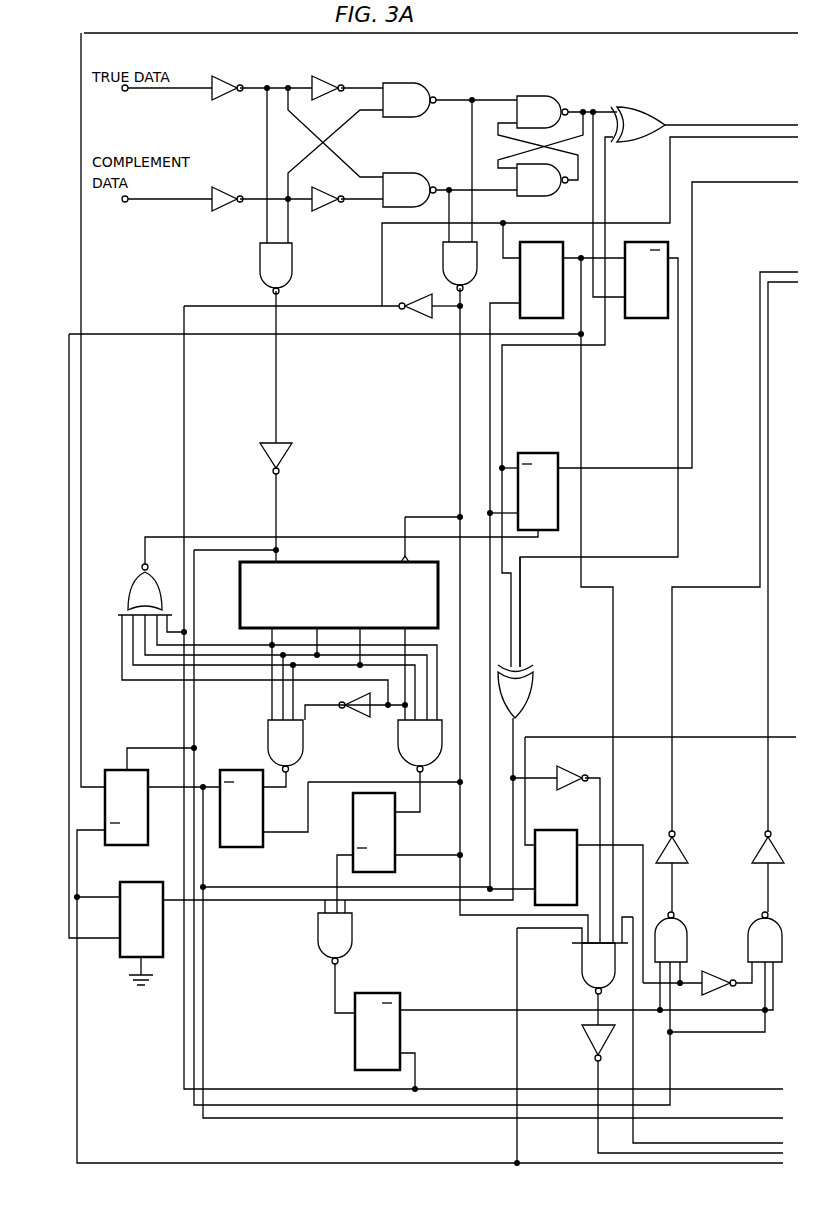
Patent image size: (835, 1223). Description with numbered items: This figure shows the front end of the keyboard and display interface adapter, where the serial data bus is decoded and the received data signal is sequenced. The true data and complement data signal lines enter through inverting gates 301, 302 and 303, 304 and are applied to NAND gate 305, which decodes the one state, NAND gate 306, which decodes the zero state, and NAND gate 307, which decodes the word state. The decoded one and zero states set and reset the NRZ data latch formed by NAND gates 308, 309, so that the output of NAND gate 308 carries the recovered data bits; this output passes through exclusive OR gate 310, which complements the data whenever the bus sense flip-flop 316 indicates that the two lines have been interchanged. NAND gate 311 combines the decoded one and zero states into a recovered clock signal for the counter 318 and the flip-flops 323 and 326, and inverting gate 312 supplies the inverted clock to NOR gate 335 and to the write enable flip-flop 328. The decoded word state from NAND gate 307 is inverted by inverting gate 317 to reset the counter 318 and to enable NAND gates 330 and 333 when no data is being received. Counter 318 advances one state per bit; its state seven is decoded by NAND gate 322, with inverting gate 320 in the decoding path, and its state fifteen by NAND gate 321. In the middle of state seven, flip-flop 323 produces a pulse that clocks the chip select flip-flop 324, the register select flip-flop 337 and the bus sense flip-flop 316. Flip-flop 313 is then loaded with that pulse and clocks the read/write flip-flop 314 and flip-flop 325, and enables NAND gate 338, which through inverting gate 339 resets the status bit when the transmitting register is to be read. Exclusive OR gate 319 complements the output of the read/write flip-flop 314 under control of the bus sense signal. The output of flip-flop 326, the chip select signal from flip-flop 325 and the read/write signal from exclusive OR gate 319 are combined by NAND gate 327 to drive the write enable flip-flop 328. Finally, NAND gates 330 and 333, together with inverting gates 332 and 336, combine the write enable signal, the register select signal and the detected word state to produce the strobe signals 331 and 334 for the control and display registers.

The inverting gate 301 is at (228, 80).
The inverting gate 302 is at (328, 80).
The inverting gate 303 is at (229, 191).
The inverting gate 304 is at (325, 208).
The NAND gate 305 is at (400, 83).
The NAND gate 306 is at (400, 173).
The NAND gate 307 is at (292, 270).
The NAND gate 308 is at (548, 97).
The NAND gate 309 is at (535, 197).
The exclusive OR gate 310 is at (648, 108).
The NAND gate 311 is at (443, 262).
The inverting gate 312 is at (405, 314).
The flip-flop 313 is at (520, 296).
The read/write flip-flop 314 is at (646, 318).
The bus sense flip-flop 316 is at (536, 453).
The inverting gate 317 is at (284, 457).
The counter 318 is at (240, 592).
The exclusive OR gate 319 is at (536, 684).
The inverting gate 320 is at (357, 716).
The NAND gate 321 is at (400, 754).
The NAND gate 322 is at (268, 737).
The flip-flop 323 is at (242, 847).
The chip select flip-flop 324 is at (128, 845).
The flip-flop 325 is at (124, 958).
The flip-flop 326 is at (395, 836).
The NAND gate 327 is at (352, 934).
The write enable flip-flop 328 is at (386, 993).
The NAND gate 330 is at (686, 928).
The strobe signal 331 is at (675, 846).
The inverting gate 332 is at (716, 968).
The NAND gate 333 is at (748, 938).
The strobe signal 334 is at (754, 862).
The NOR gate 335 is at (136, 576).
The inverting gate 336 is at (568, 766).
The register select flip-flop 337 is at (556, 830).
The NAND gate 338 is at (582, 962).
The inverting gate 339 is at (584, 1036).